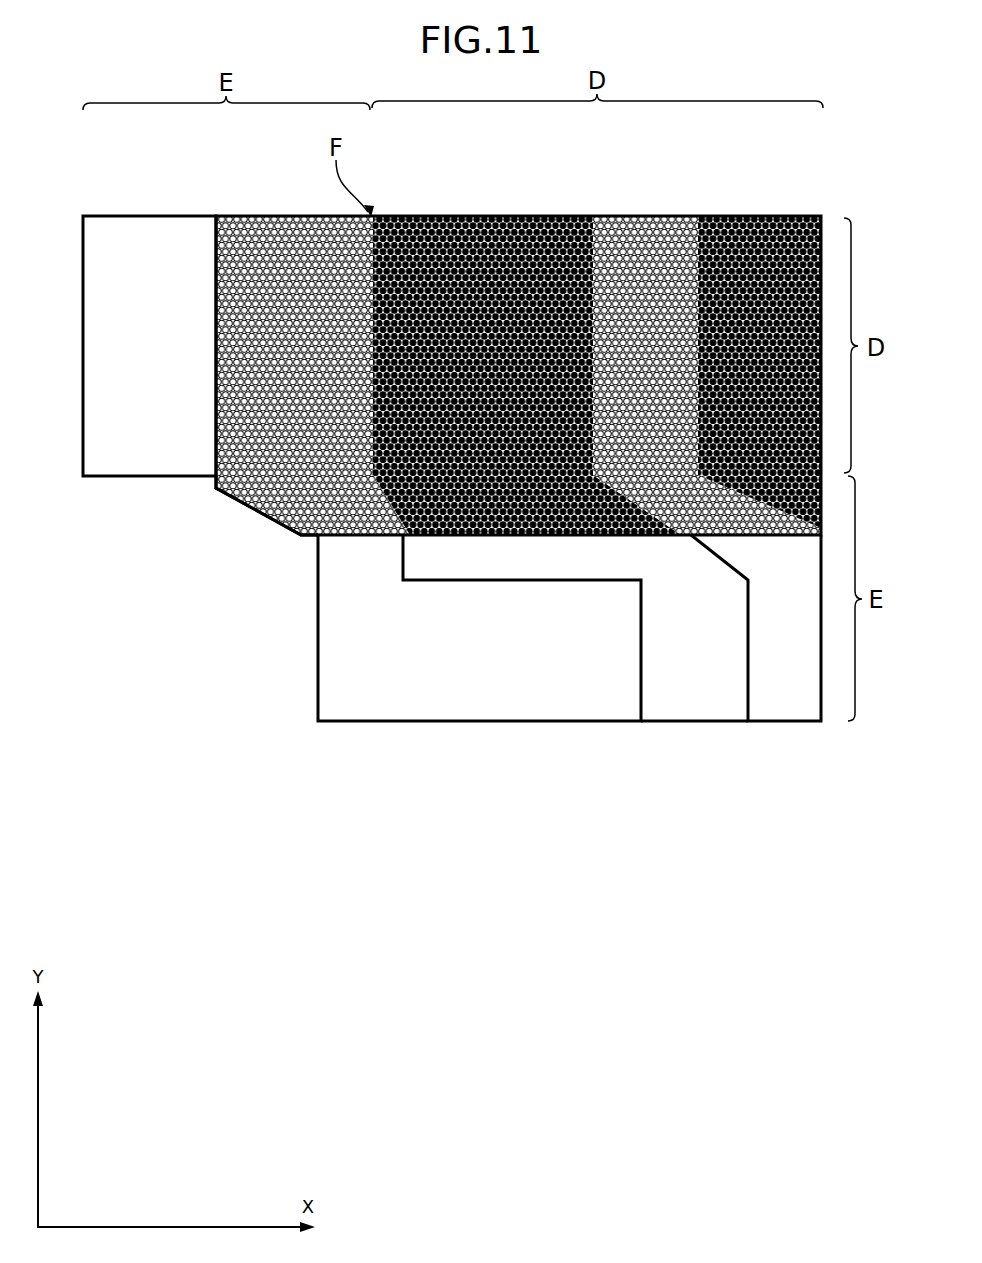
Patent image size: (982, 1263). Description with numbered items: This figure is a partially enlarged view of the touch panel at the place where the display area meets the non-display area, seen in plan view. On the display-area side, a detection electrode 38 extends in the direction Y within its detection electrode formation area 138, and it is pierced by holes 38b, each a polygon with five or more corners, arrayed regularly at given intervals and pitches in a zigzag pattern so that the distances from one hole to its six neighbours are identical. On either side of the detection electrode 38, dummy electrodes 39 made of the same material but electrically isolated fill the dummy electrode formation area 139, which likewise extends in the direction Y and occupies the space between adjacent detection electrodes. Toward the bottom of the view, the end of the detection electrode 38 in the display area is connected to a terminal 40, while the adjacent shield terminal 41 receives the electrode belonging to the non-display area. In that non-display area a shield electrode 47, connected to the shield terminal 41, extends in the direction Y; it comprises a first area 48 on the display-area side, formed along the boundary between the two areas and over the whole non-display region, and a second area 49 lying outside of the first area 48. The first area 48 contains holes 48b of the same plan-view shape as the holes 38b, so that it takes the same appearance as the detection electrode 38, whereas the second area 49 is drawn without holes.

The detection electrode 38 is at (615, 226).
The hole 38b is at (660, 213).
The dummy electrode 39 is at (450, 208).
The terminal 40 is at (766, 693).
The shield terminal 41 is at (475, 695).
The shield electrode 47 is at (262, 565).
The first area 48 is at (255, 498).
The hole 48b is at (276, 212).
The second area 49 is at (138, 448).
The detection electrode formation area 138 is at (585, 147).
The dummy electrode formation area 139 is at (585, 147).